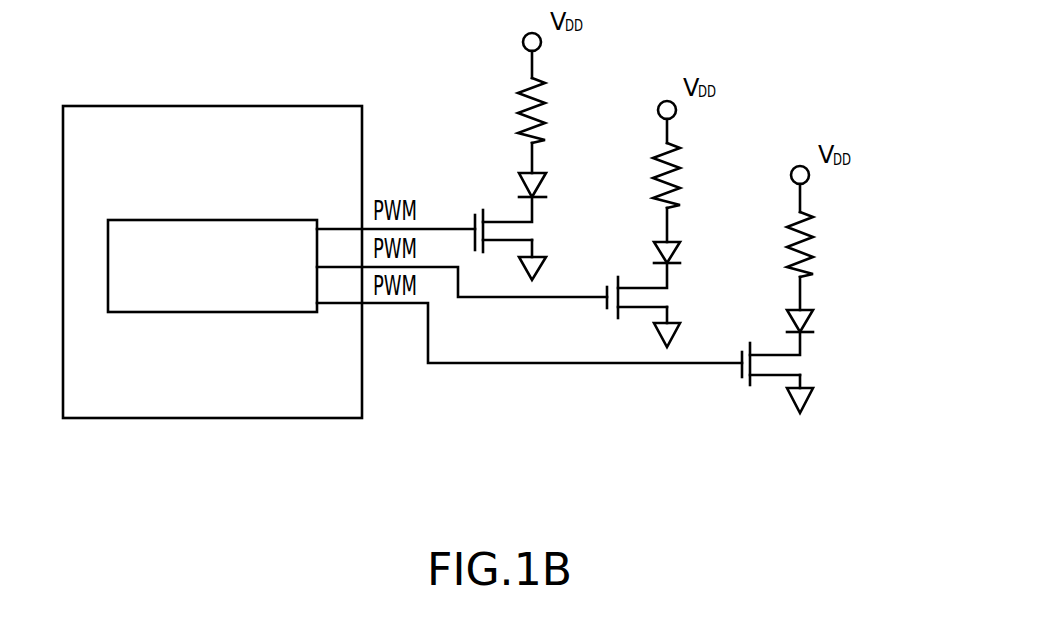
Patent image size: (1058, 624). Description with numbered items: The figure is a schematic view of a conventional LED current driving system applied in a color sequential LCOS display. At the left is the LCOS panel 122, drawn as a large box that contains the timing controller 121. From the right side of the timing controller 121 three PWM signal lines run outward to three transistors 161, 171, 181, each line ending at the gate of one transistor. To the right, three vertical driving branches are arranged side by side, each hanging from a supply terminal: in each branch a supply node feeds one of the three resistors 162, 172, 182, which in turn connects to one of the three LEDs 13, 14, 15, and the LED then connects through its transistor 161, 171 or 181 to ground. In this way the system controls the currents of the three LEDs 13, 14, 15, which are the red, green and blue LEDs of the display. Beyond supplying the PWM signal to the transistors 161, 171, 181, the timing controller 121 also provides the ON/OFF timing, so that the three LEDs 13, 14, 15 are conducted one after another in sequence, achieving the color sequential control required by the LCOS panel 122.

The LCOS panel 122 is at (295, 107).
The timing controller 121 is at (263, 220).
The transistor 161 is at (473, 226).
The resistor 162 is at (547, 92).
The LED 13 is at (547, 183).
The transistor 171 is at (607, 305).
The resistor 172 is at (680, 162).
The LED 14 is at (678, 250).
The transistor 181 is at (742, 373).
The resistor 182 is at (813, 228).
The LED 15 is at (813, 318).